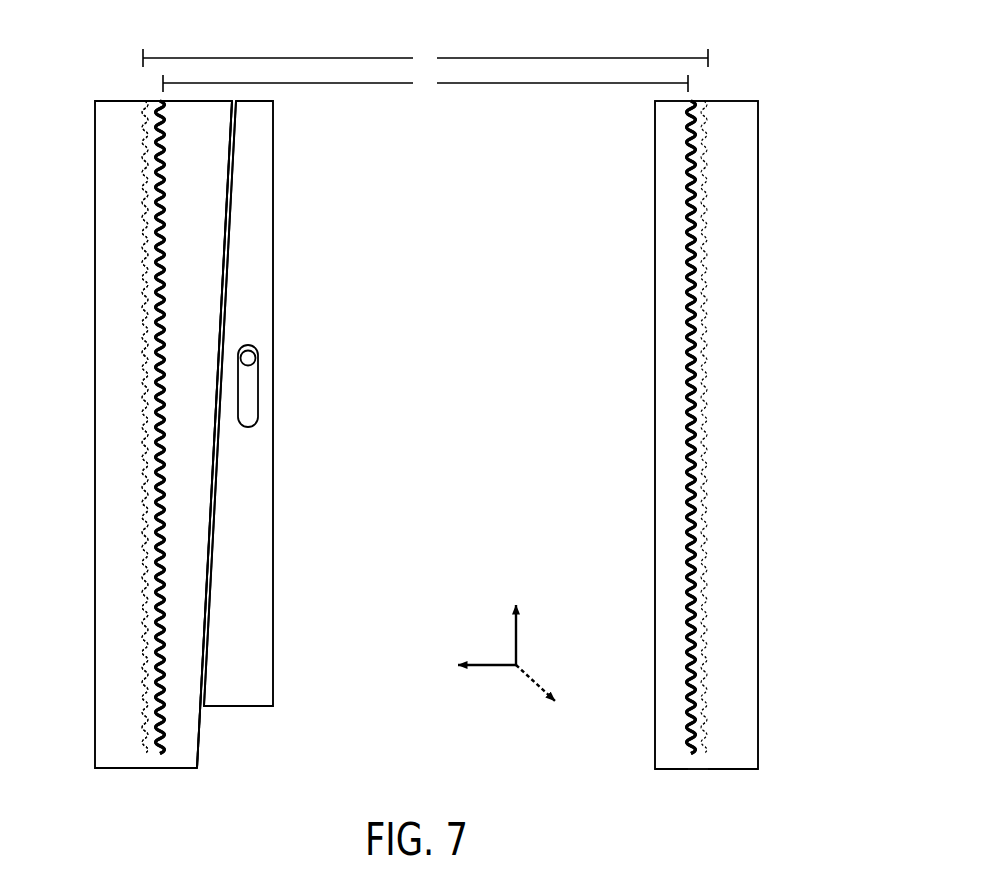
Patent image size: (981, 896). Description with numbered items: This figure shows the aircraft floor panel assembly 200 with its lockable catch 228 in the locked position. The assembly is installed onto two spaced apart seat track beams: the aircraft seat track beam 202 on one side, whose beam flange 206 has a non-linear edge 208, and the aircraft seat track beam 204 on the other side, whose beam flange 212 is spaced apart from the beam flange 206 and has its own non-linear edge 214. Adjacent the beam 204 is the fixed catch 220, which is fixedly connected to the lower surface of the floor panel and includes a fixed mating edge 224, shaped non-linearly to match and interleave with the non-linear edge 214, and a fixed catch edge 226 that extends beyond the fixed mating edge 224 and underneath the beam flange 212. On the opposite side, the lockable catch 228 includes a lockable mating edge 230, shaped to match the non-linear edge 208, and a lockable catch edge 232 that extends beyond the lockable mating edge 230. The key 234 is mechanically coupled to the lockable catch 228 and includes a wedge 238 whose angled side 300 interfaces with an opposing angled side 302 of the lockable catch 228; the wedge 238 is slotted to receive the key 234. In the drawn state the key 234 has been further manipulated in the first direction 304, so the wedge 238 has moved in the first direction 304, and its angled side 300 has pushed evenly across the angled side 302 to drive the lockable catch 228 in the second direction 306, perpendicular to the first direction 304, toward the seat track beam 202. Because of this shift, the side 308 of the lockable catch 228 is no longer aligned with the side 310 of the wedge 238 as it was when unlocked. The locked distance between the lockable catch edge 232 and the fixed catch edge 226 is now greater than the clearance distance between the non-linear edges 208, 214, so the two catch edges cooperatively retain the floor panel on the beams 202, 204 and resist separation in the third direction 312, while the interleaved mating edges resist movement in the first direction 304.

The aircraft floor panel assembly 200 is at (787, 31).
The aircraft seat track beam 202 is at (123, 101).
The aircraft seat track beam 204 is at (745, 101).
The beam flange 206 is at (141, 772).
The non-linear edge 208 is at (157, 772).
The beam flange 212 is at (718, 770).
The non-linear edge 214 is at (690, 772).
The fixed catch 220 is at (673, 770).
The fixed mating edge 224 is at (693, 772).
The fixed catch edge 226 is at (707, 772).
The lockable catch 228 is at (168, 771).
The lockable mating edge 230 is at (160, 772).
The lockable catch edge 232 is at (145, 772).
The key 234 is at (254, 351).
The wedge 238 is at (274, 524).
The angled side 300 is at (229, 277).
The angled side 302 is at (238, 124).
The first direction 304 is at (518, 636).
The second direction 306 is at (480, 667).
The side 308 is at (194, 772).
The side 310 is at (251, 710).
The third direction 312 is at (534, 686).